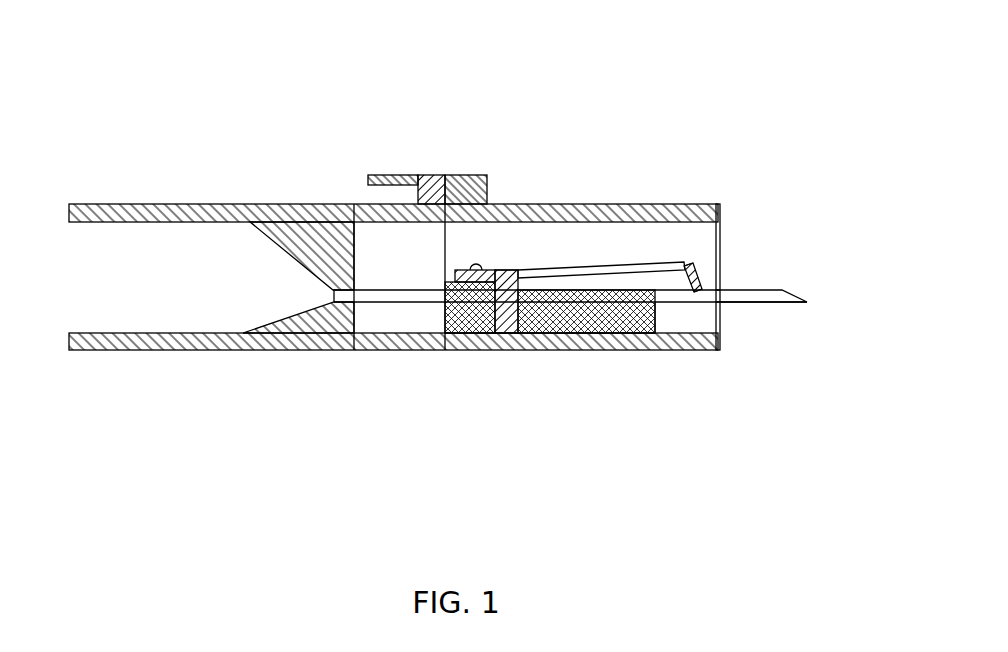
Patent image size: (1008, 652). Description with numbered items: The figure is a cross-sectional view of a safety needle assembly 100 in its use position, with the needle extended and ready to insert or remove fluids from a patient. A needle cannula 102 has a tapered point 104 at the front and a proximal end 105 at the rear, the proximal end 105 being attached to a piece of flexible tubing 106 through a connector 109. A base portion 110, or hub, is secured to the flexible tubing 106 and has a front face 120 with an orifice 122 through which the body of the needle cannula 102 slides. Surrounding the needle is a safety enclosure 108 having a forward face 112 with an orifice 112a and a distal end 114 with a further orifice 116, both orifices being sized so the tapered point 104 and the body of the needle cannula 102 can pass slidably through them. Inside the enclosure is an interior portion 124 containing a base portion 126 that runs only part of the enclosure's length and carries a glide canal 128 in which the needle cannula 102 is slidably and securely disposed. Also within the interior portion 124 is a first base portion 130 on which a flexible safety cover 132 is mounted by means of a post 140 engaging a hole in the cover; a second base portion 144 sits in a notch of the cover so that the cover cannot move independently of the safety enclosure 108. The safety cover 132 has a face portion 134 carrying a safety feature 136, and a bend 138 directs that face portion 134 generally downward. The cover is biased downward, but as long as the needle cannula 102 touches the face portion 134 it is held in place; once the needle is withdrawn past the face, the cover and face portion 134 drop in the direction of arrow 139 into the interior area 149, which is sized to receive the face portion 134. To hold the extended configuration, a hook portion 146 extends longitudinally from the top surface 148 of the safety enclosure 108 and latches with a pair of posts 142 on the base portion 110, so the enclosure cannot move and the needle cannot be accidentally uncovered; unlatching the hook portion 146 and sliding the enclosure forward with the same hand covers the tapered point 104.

The safety needle assembly 100 is at (726, 50).
The needle cannula 102 is at (773, 305).
The tapered point 104 is at (793, 296).
The proximal end 105 is at (292, 316).
The flexible tubing 106 is at (132, 350).
The safety enclosure 108 is at (606, 200).
The connector 109 is at (341, 306).
The base portion 110 is at (368, 198).
The forward face 112 is at (720, 348).
The orifice 112a is at (727, 288).
The distal end 114 is at (446, 233).
The orifice 116 is at (443, 300).
The front face 120 is at (458, 320).
The orifice 122 is at (447, 318).
The interior portion 124 is at (540, 249).
The base portion 126 is at (548, 320).
The glide canal 128 is at (627, 333).
The first base portion 130 is at (505, 300).
The flexible safety cover 132 is at (628, 264).
The face portion 134 is at (698, 268).
The safety feature 136 is at (701, 286).
The bend 138 is at (697, 266).
The arrow 139 is at (674, 309).
The post 140 is at (477, 267).
The posts 142 is at (435, 175).
The second base portion 144 is at (513, 320).
The hook portion 146 is at (393, 175).
The top surface 148 is at (460, 175).
The interior area 149 is at (683, 329).